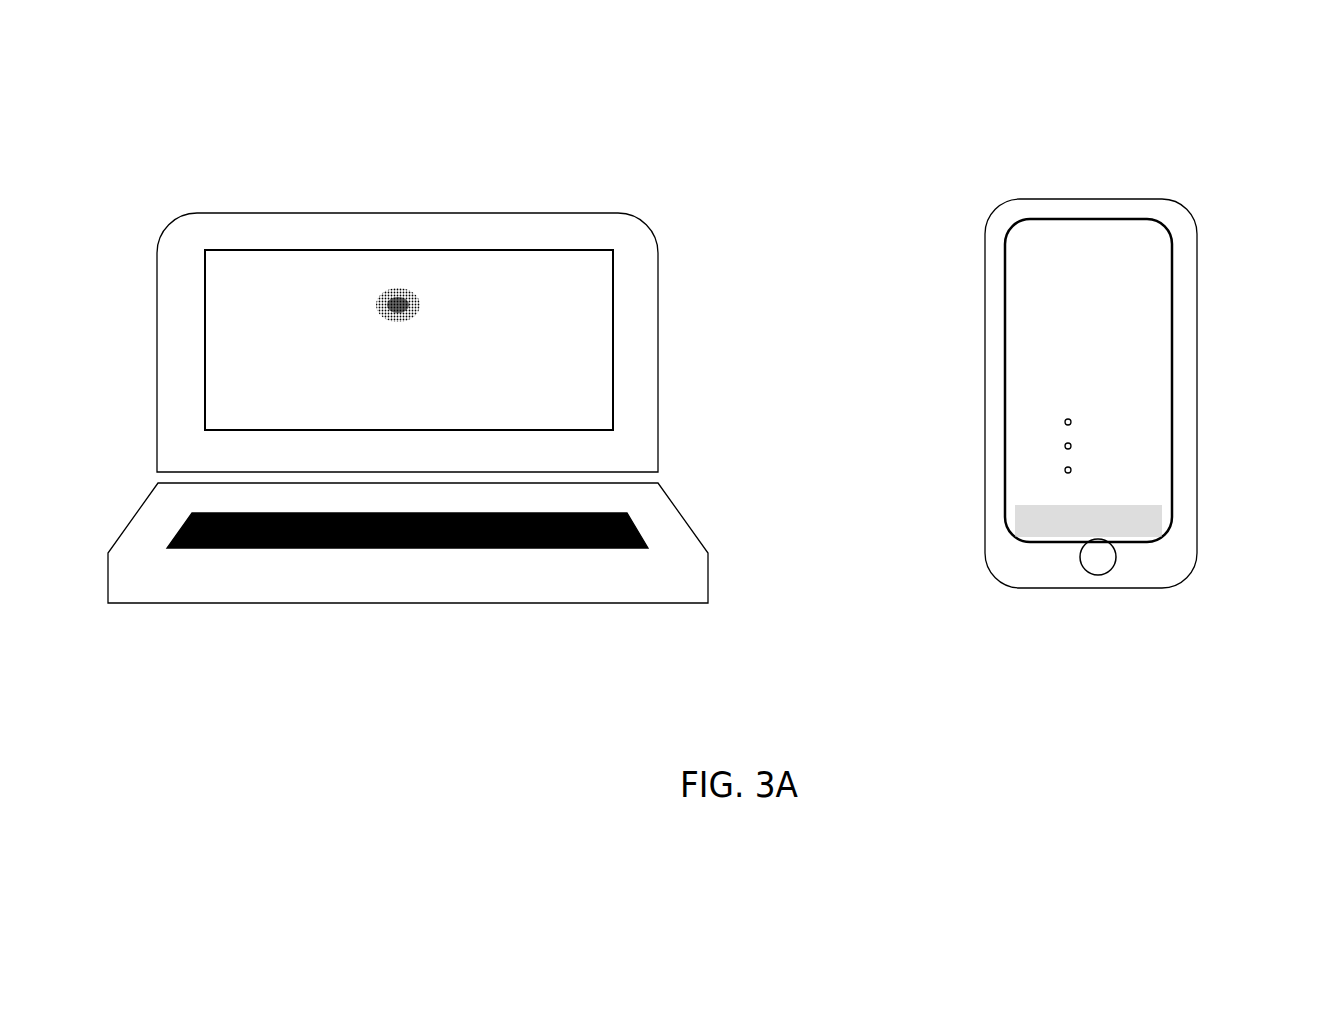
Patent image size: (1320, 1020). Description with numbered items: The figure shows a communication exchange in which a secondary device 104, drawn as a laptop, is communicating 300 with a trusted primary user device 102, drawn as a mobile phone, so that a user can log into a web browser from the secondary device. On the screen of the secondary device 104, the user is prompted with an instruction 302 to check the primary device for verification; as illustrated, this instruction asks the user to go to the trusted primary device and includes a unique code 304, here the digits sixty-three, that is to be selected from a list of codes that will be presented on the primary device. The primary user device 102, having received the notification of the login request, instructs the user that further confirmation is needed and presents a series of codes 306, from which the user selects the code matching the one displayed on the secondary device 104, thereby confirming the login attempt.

The communicating 300 is at (1208, 120).
The secondary device 104 is at (658, 270).
The primary user device 102 is at (1197, 266).
The instruction 302 is at (560, 348).
The unique code 304 is at (396, 396).
The series of codes 306 is at (1137, 440).